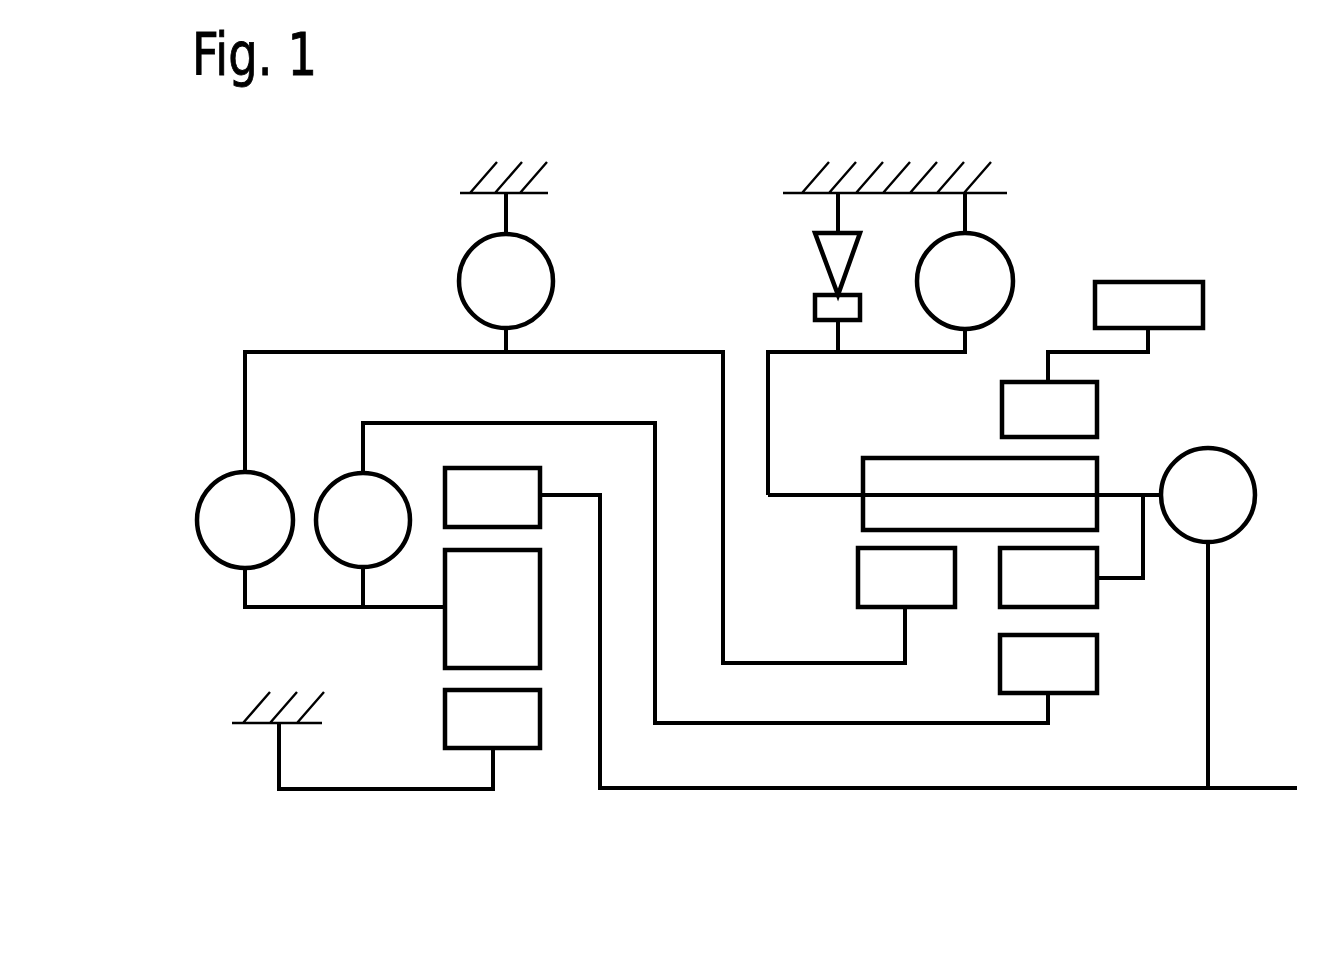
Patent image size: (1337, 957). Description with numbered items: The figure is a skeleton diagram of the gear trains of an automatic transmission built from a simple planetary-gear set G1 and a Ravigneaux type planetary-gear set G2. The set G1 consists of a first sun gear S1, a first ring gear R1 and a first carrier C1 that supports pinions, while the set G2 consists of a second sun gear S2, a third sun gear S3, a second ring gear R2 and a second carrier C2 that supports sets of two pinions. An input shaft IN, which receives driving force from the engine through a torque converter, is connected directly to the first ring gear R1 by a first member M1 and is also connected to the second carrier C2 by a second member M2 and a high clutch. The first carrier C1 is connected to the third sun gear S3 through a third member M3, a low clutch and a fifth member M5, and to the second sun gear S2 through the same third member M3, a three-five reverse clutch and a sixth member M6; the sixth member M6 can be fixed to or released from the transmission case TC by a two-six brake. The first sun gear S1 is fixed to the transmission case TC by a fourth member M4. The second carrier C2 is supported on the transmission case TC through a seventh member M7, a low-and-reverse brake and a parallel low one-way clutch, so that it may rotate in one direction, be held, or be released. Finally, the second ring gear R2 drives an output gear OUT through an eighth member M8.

The first member M1 is at (750, 787).
The second member M2 is at (1208, 617).
The third member M3 is at (397, 607).
The fourth member M4 is at (400, 789).
The fifth member M5 is at (750, 722).
The sixth member M6 is at (750, 661).
The seventh member M7 is at (768, 382).
The eighth member M8 is at (1069, 350).
The simple planetary-gear set G1 is at (532, 755).
The Ravigneaux type planetary-gear set G2 is at (1103, 686).
The transmission case TC is at (548, 193).
The input shaft IN is at (1252, 764).
The output gear OUT is at (1149, 305).
The first ring gear R1 is at (492, 497).
The first carrier C1 is at (492, 609).
The first sun gear S1 is at (492, 719).
The second sun gear S2 is at (906, 577).
The third sun gear S3 is at (1048, 664).
The second ring gear R2 is at (1049, 409).
The second carrier C2 is at (862, 474).